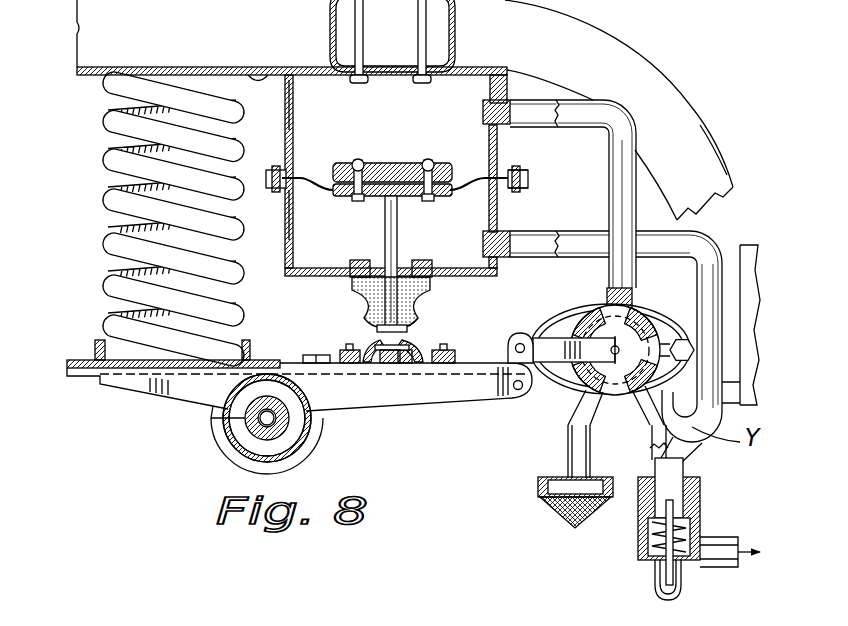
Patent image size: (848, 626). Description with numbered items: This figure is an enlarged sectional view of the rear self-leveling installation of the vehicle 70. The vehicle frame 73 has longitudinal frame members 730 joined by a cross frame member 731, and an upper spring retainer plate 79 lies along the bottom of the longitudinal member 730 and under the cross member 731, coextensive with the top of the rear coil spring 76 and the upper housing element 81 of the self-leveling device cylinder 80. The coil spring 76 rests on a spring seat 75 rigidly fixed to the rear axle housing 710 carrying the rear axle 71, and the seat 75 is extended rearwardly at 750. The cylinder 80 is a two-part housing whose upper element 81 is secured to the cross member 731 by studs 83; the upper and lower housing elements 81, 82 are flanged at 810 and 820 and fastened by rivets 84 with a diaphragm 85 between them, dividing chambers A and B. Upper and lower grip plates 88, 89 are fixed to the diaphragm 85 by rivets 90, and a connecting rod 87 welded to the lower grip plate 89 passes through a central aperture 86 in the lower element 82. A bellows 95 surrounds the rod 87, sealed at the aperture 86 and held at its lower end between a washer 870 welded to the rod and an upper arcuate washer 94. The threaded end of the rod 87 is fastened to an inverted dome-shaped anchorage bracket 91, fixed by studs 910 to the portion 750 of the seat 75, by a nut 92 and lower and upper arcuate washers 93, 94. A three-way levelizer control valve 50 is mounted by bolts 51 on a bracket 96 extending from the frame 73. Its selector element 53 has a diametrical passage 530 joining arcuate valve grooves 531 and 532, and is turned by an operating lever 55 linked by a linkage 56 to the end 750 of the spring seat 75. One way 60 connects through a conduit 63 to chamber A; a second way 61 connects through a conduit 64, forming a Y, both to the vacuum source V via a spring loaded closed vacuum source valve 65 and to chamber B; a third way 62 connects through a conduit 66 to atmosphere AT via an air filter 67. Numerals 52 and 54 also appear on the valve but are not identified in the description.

The vehicle frame 73 is at (75, 59).
The upper spring retainer plate 79 is at (250, 70).
The studs 83 is at (420, 30).
The cross frame member 731 is at (455, 45).
The conduit 63 is at (528, 108).
The vehicle 70 is at (661, 63).
The longitudinal frame members 730 is at (693, 132).
The rear vehicle coil spring 76 is at (104, 150).
The upper housing element 81 is at (289, 92).
The rivets 84 is at (275, 167).
The upper grip plate 88 is at (378, 165).
The rivets 90 is at (432, 162).
The flange of upper housing element 810 is at (524, 174).
The diaphragm 85 is at (524, 179).
The flange of lower housing element 820 is at (524, 185).
The lower housing element 82 is at (290, 212).
The lower grip plate 89 is at (408, 197).
The connecting rod 87 is at (397, 244).
The conduit 64 is at (522, 240).
The bracket 96 is at (748, 262).
The self-leveling device cylinder 80 is at (296, 278).
The aperture 86 is at (355, 268).
The bellows 95 is at (363, 313).
The washer 870 is at (420, 297).
The linkage 56 is at (512, 338).
The passage 530 is at (600, 318).
The selector element 53 is at (566, 322).
The way 60 is at (632, 292).
The arcuate valve groove 531 is at (640, 320).
The three-way levelizer control valve 50 is at (667, 332).
The bolts 51 is at (695, 350).
The pin 52 is at (640, 362).
The studs 910 is at (350, 350).
The upper arcuate washer 94 is at (412, 345).
The valve seat 54 is at (652, 380).
The spring seat 75 is at (160, 384).
The rear axle 71 is at (255, 420).
The inverted dome-shaped anchorage bracket 91 is at (388, 364).
The nut 92 is at (403, 365).
The lower arcuate washer 93 is at (414, 360).
The rear axle housing 710 is at (312, 430).
The rearwardly extending portion of spring seat 750 is at (495, 400).
The operating lever 55 is at (565, 372).
The way 62 is at (578, 408).
The conduit 66 is at (568, 440).
The arcuate valve groove 532 is at (610, 398).
The way 61 is at (650, 438).
The air filter 67 is at (545, 496).
The spring loaded closed vacuum source valve 65 is at (643, 545).